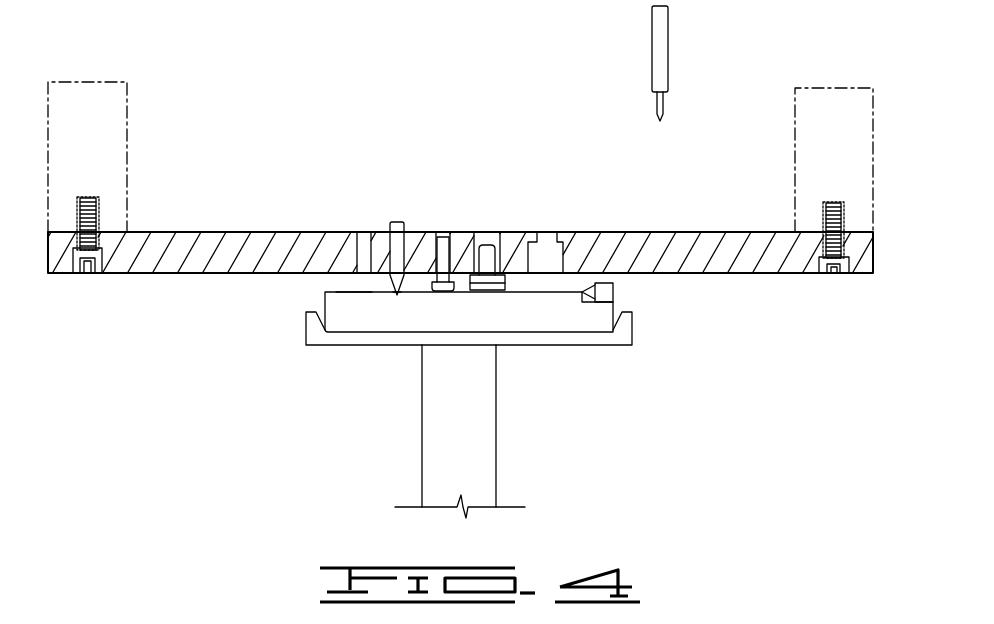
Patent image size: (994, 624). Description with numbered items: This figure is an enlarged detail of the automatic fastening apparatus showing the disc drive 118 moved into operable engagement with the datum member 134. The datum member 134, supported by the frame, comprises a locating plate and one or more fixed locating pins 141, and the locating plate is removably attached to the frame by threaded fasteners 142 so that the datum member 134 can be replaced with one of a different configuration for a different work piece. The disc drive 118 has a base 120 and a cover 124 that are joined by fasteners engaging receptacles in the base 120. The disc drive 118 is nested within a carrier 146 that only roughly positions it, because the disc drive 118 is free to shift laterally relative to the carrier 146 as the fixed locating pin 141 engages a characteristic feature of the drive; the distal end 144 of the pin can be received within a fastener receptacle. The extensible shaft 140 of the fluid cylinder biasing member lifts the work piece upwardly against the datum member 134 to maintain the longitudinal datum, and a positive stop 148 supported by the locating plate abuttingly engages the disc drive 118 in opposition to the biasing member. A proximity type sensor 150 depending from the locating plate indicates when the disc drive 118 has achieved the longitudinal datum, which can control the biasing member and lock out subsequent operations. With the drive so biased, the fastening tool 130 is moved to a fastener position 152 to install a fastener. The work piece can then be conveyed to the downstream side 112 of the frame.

The downstream side 112 is at (127, 131).
The disc drive 118 is at (622, 293).
The base 120 is at (522, 320).
The cover 124 is at (340, 291).
The fastening tool 130 is at (652, 52).
The datum member 134 is at (678, 213).
The extensible shaft 140 is at (497, 462).
The fixed locating pin 141 is at (393, 224).
The threaded fastener 142 is at (87, 273).
The distal end 144 is at (397, 297).
The carrier 146 is at (597, 345).
The positive stop 148 is at (443, 236).
The proximity type sensor 150 is at (484, 244).
The fastener position 152 is at (365, 297).